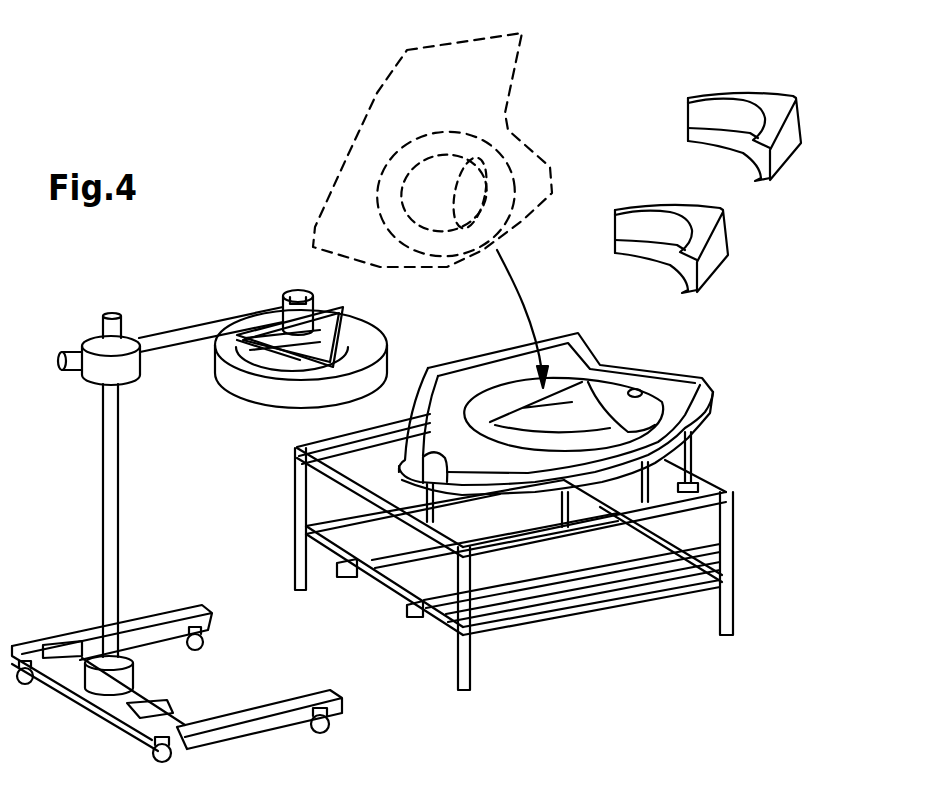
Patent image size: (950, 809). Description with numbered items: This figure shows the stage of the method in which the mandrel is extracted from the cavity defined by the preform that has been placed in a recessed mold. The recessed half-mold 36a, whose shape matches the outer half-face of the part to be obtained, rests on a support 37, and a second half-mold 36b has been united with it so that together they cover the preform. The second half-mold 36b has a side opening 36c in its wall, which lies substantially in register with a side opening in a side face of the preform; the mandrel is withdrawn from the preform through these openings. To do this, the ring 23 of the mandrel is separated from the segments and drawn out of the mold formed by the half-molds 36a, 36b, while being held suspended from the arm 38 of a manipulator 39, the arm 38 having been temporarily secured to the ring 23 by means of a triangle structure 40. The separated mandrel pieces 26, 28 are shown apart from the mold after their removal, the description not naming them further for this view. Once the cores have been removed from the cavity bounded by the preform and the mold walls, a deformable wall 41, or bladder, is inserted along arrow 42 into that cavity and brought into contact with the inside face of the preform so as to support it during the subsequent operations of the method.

The ring 23 is at (251, 395).
The cushion segment 26 is at (710, 270).
The cushion segment 28 is at (792, 160).
The recessed half-mold 36a is at (700, 436).
The second half-mold 36b is at (693, 382).
The side opening 36c is at (629, 388).
The support 37 is at (735, 553).
The arm 38 is at (158, 336).
The manipulator 39 is at (100, 540).
The triangle structure 40 is at (387, 331).
The deformable wall 41 is at (363, 138).
The arrow 42 is at (524, 285).